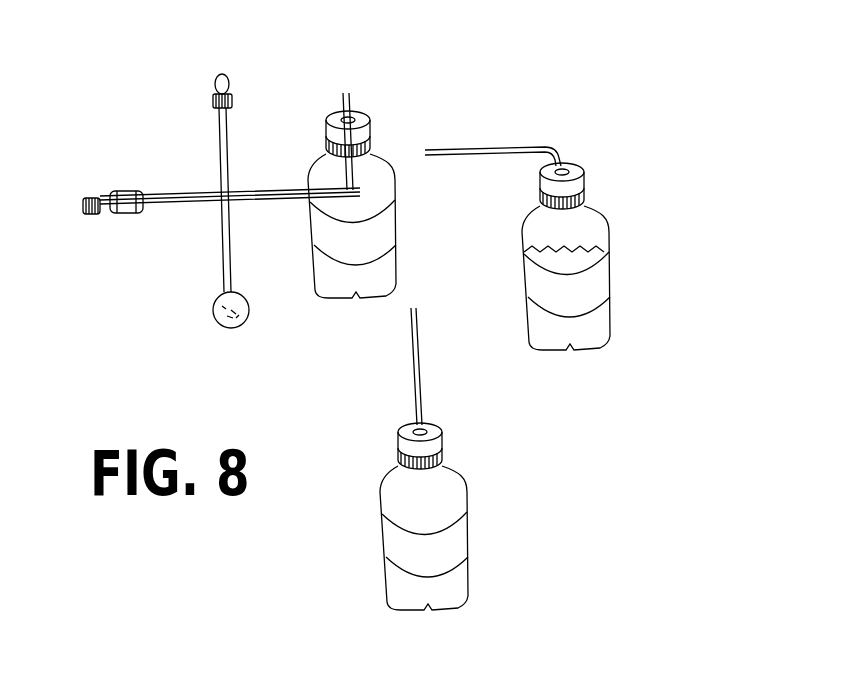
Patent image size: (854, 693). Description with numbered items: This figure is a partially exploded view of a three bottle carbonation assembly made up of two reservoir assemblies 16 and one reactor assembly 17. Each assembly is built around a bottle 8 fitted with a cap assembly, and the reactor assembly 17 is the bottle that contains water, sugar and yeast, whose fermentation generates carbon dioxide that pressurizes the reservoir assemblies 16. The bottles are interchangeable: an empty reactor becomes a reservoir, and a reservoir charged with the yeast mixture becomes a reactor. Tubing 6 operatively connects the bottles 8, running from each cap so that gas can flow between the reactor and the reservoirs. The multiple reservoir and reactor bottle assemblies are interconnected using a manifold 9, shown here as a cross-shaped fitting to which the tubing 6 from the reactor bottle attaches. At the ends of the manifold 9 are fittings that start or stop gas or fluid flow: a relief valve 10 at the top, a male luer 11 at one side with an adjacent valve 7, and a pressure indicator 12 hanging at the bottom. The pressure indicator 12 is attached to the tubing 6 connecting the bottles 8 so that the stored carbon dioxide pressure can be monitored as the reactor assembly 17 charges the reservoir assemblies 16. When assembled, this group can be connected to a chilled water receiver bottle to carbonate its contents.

The tubing 6 is at (351, 95).
The valve 7 is at (128, 190).
The bottle 8 is at (385, 147).
The manifold 9 is at (257, 189).
The relief valve 10 is at (232, 91).
The male luer 11 is at (93, 200).
The pressure indicator 12 is at (250, 308).
The reservoir assembly 16 is at (460, 440).
The reactor assembly 17 is at (602, 178).